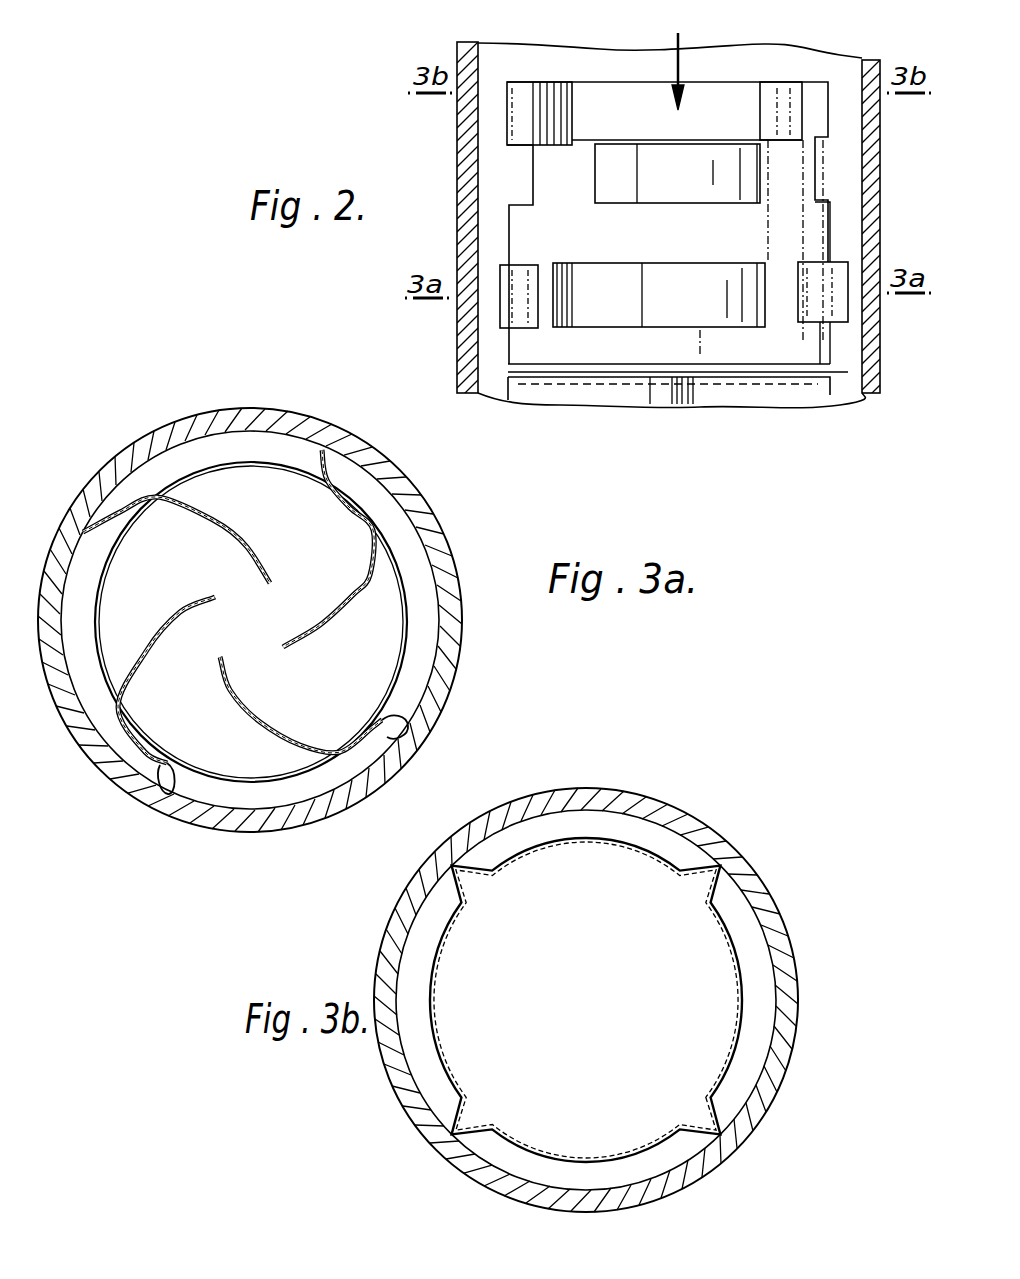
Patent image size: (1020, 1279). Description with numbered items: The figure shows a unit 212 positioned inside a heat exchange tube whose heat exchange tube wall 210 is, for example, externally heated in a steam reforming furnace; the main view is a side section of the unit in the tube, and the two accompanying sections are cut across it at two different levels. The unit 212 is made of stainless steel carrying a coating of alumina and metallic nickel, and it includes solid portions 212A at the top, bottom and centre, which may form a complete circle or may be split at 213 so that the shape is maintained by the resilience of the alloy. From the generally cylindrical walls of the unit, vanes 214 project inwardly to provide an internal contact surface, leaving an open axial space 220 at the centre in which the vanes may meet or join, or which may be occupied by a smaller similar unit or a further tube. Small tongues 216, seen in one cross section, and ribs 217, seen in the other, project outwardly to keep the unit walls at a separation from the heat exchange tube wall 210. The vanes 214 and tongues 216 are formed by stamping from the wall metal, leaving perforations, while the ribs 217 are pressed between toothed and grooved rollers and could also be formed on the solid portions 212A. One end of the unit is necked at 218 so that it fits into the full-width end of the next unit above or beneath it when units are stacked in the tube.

In FIG. 2, the heat exchange tube wall 210 is at (457, 118).
In FIG. 3A, the heat exchange tube wall 210 is at (210, 827).
In FIG. 3B, the heat exchange tube wall 210 is at (640, 790).
In FIG. 2, the unit 212 is at (494, 190).
In FIG. 3A, the unit 212 is at (372, 513).
In FIG. 2, the solid portions 212A is at (662, 131).
In FIG. 3B, the solid portions 212A is at (430, 1015).
In FIG. 3B, the split 213 is at (732, 1058).
In FIG. 2, the vanes 214 is at (648, 193).
In FIG. 3A, the vanes 214 is at (317, 627).
In FIG. 2, the tongues 216 is at (572, 312).
In FIG. 3A, the tongues 216 is at (100, 527).
In FIG. 2, the ribs 217 is at (558, 88).
In FIG. 3B, the ribs 217 is at (722, 866).
In FIG. 2, the necked end 218 is at (520, 368).
In FIG. 3A, the axial space 220 is at (282, 638).
In FIG. 3B, the axial space 220 is at (616, 1010).